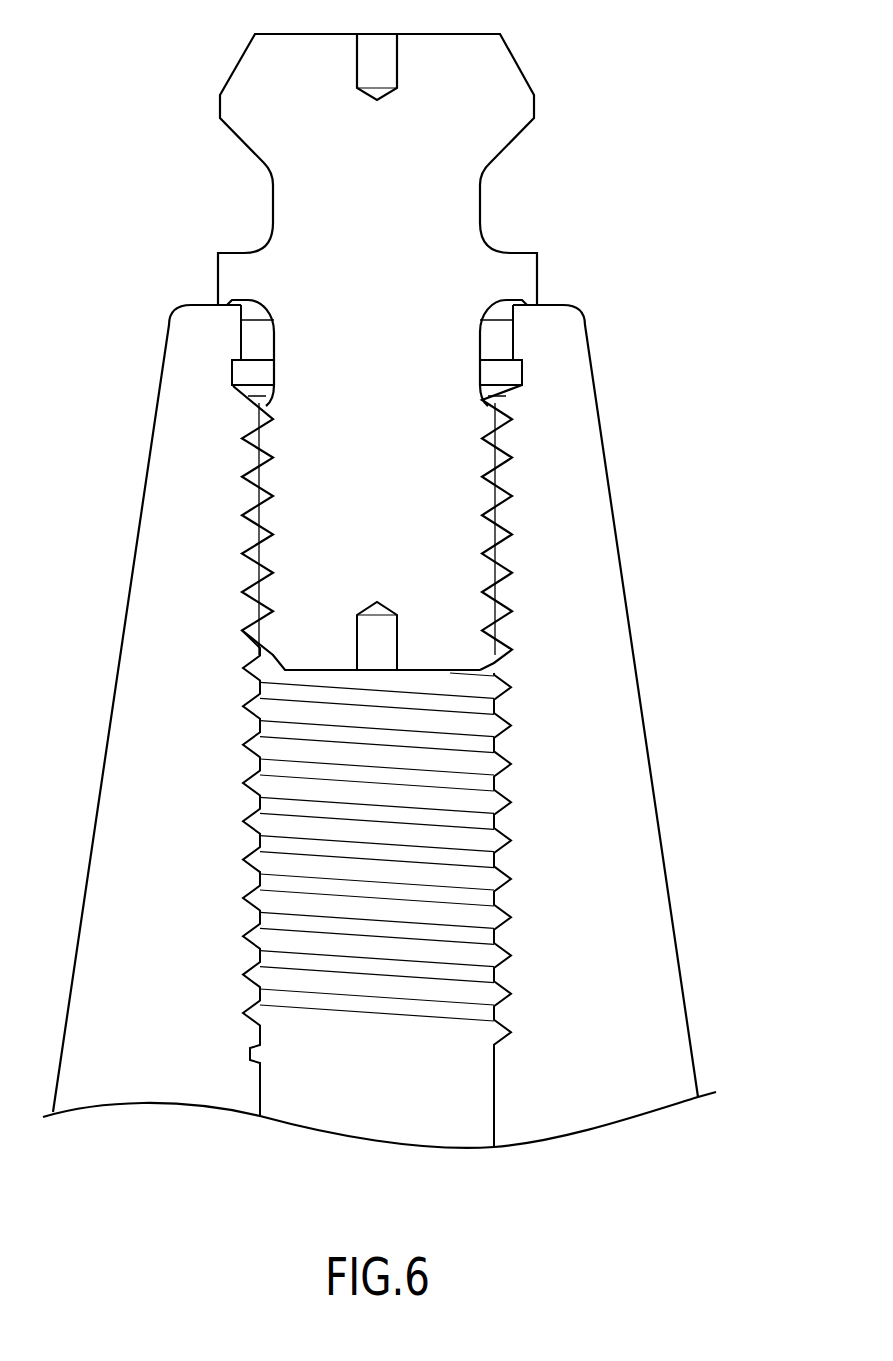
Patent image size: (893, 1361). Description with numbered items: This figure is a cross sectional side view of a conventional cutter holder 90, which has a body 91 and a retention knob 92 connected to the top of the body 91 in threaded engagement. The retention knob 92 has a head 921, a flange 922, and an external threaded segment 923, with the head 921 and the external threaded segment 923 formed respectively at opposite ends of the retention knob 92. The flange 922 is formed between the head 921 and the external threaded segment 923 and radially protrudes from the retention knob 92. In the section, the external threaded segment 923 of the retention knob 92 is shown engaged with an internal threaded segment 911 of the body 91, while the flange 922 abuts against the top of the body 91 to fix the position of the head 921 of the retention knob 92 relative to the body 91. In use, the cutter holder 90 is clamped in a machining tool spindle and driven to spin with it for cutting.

The cutter holder 90 is at (670, 248).
The body 91 is at (395, 726).
The internal threaded segment 911 is at (500, 437).
The retention knob 92 is at (535, 106).
The head 921 is at (250, 72).
The flange 922 is at (233, 273).
The external threaded segment 923 is at (252, 436).